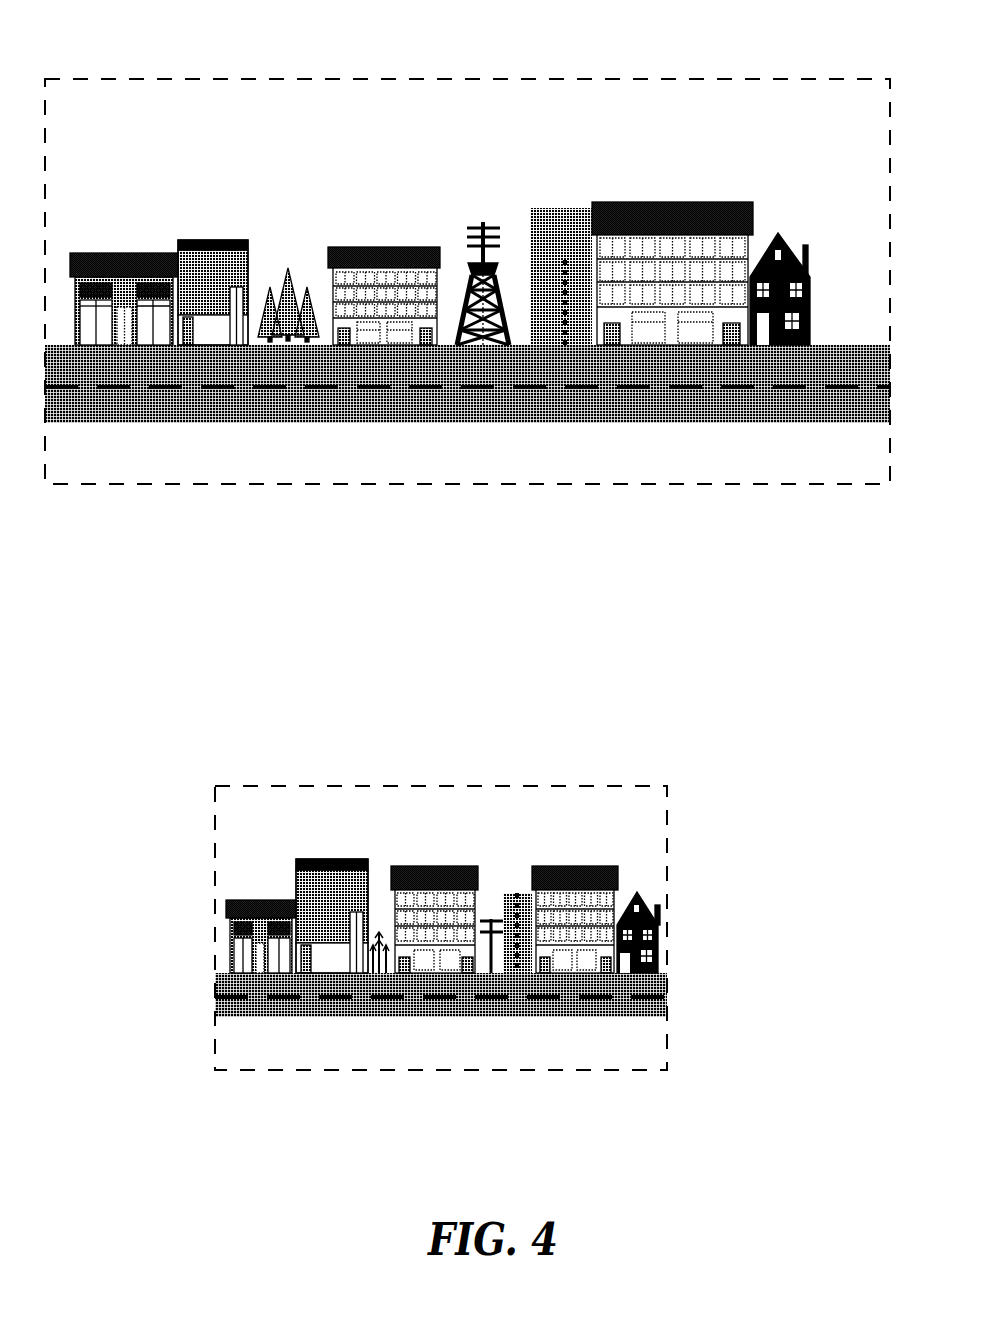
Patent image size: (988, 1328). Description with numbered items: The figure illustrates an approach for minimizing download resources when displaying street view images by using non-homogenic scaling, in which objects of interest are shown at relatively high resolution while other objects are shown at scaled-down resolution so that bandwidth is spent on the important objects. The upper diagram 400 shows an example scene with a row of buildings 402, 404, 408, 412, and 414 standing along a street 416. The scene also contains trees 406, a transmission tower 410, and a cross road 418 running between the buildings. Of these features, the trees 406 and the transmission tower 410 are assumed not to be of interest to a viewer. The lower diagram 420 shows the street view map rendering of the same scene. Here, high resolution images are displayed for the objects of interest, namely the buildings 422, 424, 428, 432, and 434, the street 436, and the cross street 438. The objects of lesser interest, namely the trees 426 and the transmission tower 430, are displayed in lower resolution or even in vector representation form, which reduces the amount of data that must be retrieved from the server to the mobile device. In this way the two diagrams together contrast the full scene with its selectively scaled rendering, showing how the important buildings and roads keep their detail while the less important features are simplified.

The diagram 400 is at (747, 63).
The building 402 is at (150, 247).
The building 404 is at (195, 228).
The trees 406 is at (293, 250).
The building 408 is at (390, 225).
The transmission tower 410 is at (477, 210).
The building 412 is at (695, 188).
The building 414 is at (782, 217).
The street 416 is at (378, 430).
The cross road 418 is at (552, 348).
The diagram 420 is at (707, 732).
The building 422 is at (287, 893).
The building 424 is at (323, 853).
The trees 426 is at (375, 968).
The building 428 is at (438, 857).
The transmission tower 430 is at (490, 968).
The building 432 is at (585, 857).
The building 434 is at (650, 890).
The street 436 is at (325, 1018).
The cross street 438 is at (521, 885).